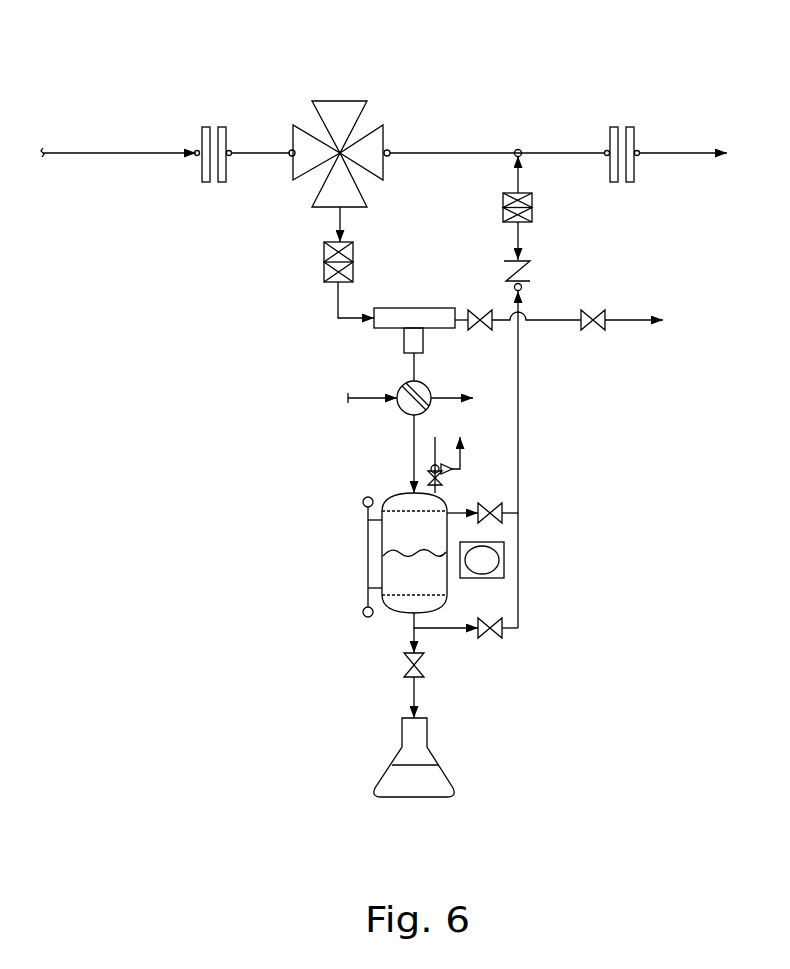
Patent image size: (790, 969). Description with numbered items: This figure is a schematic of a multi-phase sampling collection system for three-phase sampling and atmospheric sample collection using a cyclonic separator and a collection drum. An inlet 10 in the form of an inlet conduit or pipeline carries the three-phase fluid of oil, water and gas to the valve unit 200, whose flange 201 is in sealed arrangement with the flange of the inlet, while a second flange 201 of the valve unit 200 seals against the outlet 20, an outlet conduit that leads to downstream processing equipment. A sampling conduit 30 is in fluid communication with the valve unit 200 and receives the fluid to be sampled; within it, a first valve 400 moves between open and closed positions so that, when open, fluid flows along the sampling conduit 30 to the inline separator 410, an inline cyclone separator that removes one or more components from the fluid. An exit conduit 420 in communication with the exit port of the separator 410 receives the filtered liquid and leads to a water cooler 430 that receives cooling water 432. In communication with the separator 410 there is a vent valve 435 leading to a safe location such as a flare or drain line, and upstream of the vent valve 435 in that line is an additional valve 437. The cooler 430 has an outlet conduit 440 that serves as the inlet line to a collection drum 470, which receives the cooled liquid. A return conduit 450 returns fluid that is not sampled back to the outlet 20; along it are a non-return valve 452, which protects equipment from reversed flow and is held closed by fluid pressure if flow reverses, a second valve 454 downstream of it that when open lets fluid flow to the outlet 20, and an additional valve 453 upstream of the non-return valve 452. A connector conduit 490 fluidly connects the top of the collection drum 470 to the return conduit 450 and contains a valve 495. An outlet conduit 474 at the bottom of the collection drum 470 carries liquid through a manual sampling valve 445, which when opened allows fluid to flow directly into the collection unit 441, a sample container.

The inlet 10 is at (108, 152).
The outlet 20 is at (680, 153).
The valve unit 200 is at (341, 95).
The flange 201 is at (215, 108).
The first valve 400 is at (322, 255).
The sampling conduit 30 is at (337, 312).
The inline separator 410 is at (418, 308).
The exit conduit 420 is at (412, 368).
The water cooler 430 is at (400, 410).
The cooling water 432 is at (387, 395).
The outlet conduit 440 is at (413, 448).
The collection drum 470 is at (434, 542).
The additional valve (V1) 437 is at (482, 362).
The vent valve 435 is at (588, 328).
The non-return valve 452 is at (535, 265).
The second valve 454 is at (533, 210).
The valve (V3) 495 is at (540, 471).
The connector conduit 490 is at (519, 513).
The return conduit 450 is at (505, 570).
The additional valve (V2) 453 is at (508, 695).
The manual sampling valve 445 is at (403, 660).
The outlet conduit 474 is at (410, 700).
The collection unit 441 is at (440, 778).